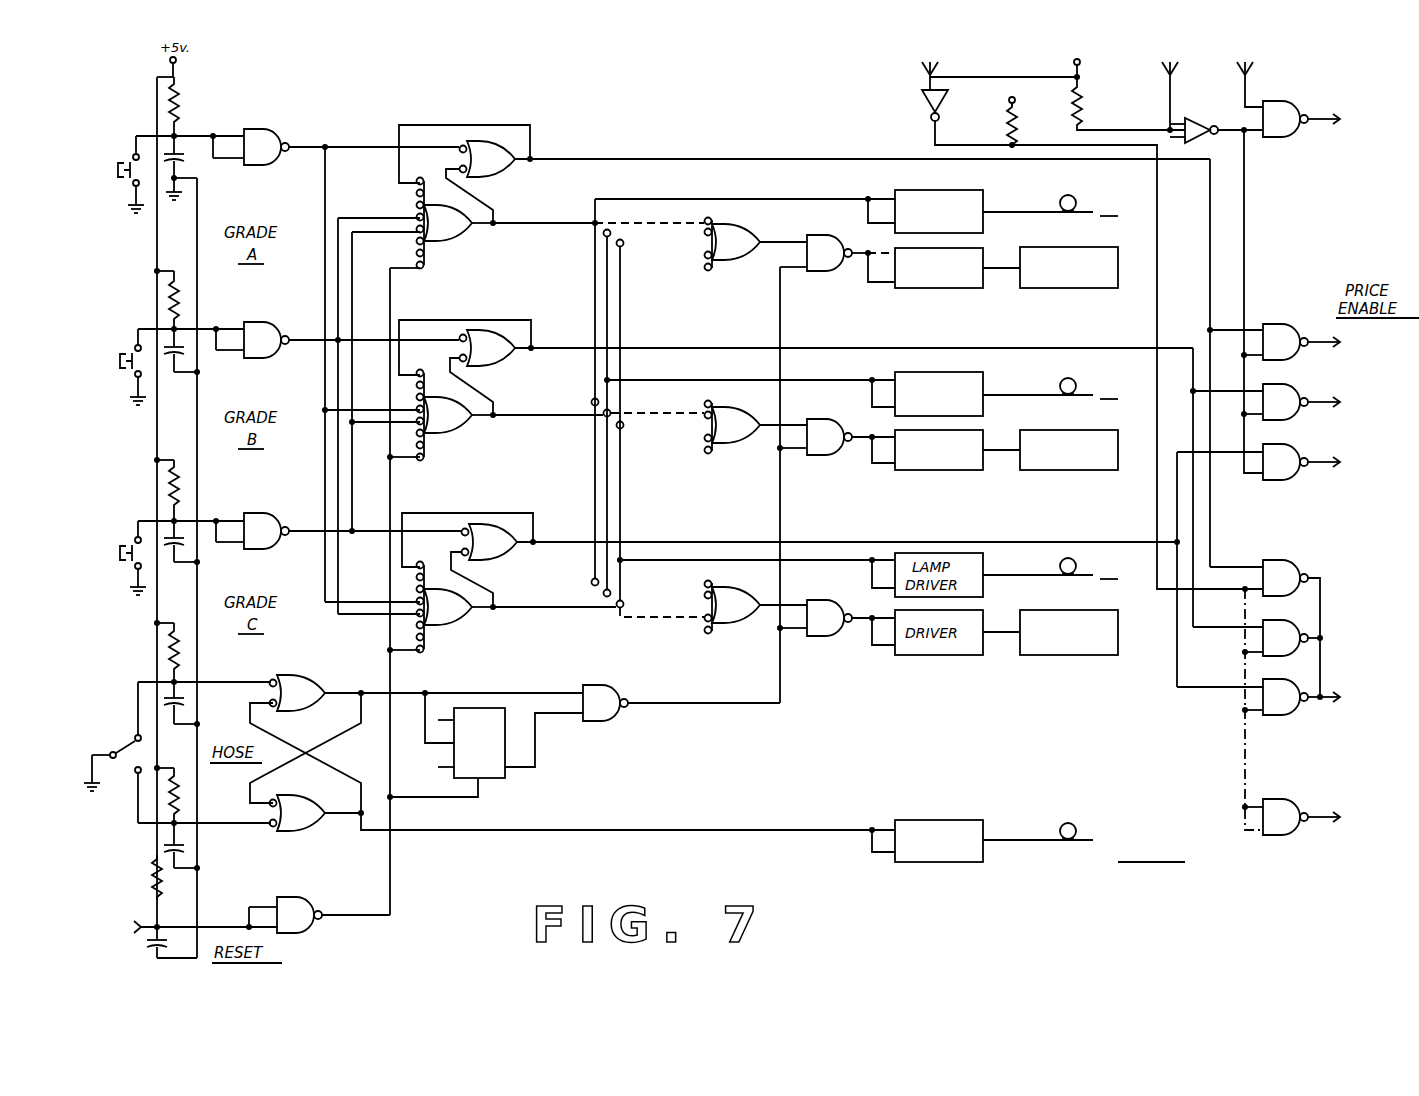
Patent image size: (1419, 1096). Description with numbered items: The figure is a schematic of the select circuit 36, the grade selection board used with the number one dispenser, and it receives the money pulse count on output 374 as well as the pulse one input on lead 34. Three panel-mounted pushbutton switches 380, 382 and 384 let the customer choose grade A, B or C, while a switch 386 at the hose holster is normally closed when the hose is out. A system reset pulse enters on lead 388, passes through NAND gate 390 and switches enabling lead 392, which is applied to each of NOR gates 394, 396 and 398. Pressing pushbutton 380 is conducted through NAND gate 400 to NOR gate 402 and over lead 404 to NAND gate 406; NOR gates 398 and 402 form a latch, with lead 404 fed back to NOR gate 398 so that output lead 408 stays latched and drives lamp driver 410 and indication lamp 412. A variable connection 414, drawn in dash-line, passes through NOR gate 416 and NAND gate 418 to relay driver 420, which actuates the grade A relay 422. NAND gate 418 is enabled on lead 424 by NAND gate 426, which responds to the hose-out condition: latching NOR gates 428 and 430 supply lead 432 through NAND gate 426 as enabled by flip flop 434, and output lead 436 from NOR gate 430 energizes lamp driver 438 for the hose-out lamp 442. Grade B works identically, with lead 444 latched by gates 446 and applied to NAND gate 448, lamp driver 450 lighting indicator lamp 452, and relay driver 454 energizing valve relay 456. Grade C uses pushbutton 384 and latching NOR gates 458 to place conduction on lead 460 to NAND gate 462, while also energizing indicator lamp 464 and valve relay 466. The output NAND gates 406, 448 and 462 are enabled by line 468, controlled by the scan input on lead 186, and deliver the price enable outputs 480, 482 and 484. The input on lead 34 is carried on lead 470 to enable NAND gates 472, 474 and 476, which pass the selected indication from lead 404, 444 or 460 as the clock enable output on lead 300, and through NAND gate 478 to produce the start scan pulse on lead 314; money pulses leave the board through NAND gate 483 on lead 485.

The lead 34 is at (921, 86).
The select circuit 36 is at (643, 90).
The lead 186 is at (1165, 86).
The lead 300 is at (1323, 640).
The lead 314 is at (1320, 825).
The output 374 is at (1250, 86).
The pushbutton switch 380 is at (136, 130).
The pushbutton switch 382 is at (138, 323).
The pushbutton switch 384 is at (138, 515).
The switch 386 is at (110, 752).
The lead 388 is at (140, 925).
The NAND gate 390 is at (289, 897).
The enabling lead 392 is at (391, 890).
The NOR gate 394 is at (440, 630).
The NOR gate 396 is at (440, 440).
The NOR gate 398 is at (440, 252).
The NAND gate 400 is at (252, 130).
The NOR gate 402 is at (490, 178).
The lead 404 is at (740, 161).
The NAND gate 406 is at (1268, 324).
The output lead 408 is at (527, 230).
The lamp driver 410 is at (932, 190).
The indication lamp 412 is at (1068, 192).
The connection 414 is at (630, 245).
The NOR gate 416 is at (727, 262).
The NAND gate 418 is at (820, 272).
The relay driver 420 is at (934, 290).
The relay 422 is at (1074, 290).
The lead 424 is at (783, 497).
The NAND gate 426 is at (596, 722).
The NOR gate 428 is at (300, 676).
The NOR gate 430 is at (292, 832).
The lead 432 is at (465, 690).
The flip flop 434 is at (490, 780).
The output lead 436 is at (590, 830).
The lamp driver 438 is at (932, 820).
The hose out lamp 442 is at (1066, 822).
The lead 444 is at (678, 348).
The latching gates 446 is at (540, 386).
The NAND gate 448 is at (1288, 390).
The lamp driver 450 is at (932, 372).
The indicator lamp 452 is at (1072, 378).
The relay driver 454 is at (934, 472).
The valve relay 456 is at (1066, 472).
The NOR gates 458 is at (540, 580).
The lead 460 is at (862, 540).
The NAND gate 462 is at (1288, 450).
The indicator lamp 464 is at (1062, 568).
The valve relay 466 is at (1062, 657).
The line 468 is at (1246, 224).
The lead 470 is at (1158, 255).
The NAND gate 472 is at (1284, 560).
The NAND gate 474 is at (1286, 620).
The NAND gate 476 is at (1286, 680).
The NAND gate 478 is at (1282, 799).
The price enable output 480 is at (1318, 346).
The price enable output 482 is at (1318, 406).
The money pulses NAND gate 483 is at (1285, 101).
The price enable output 484 is at (1320, 466).
The lead 485 is at (1314, 124).